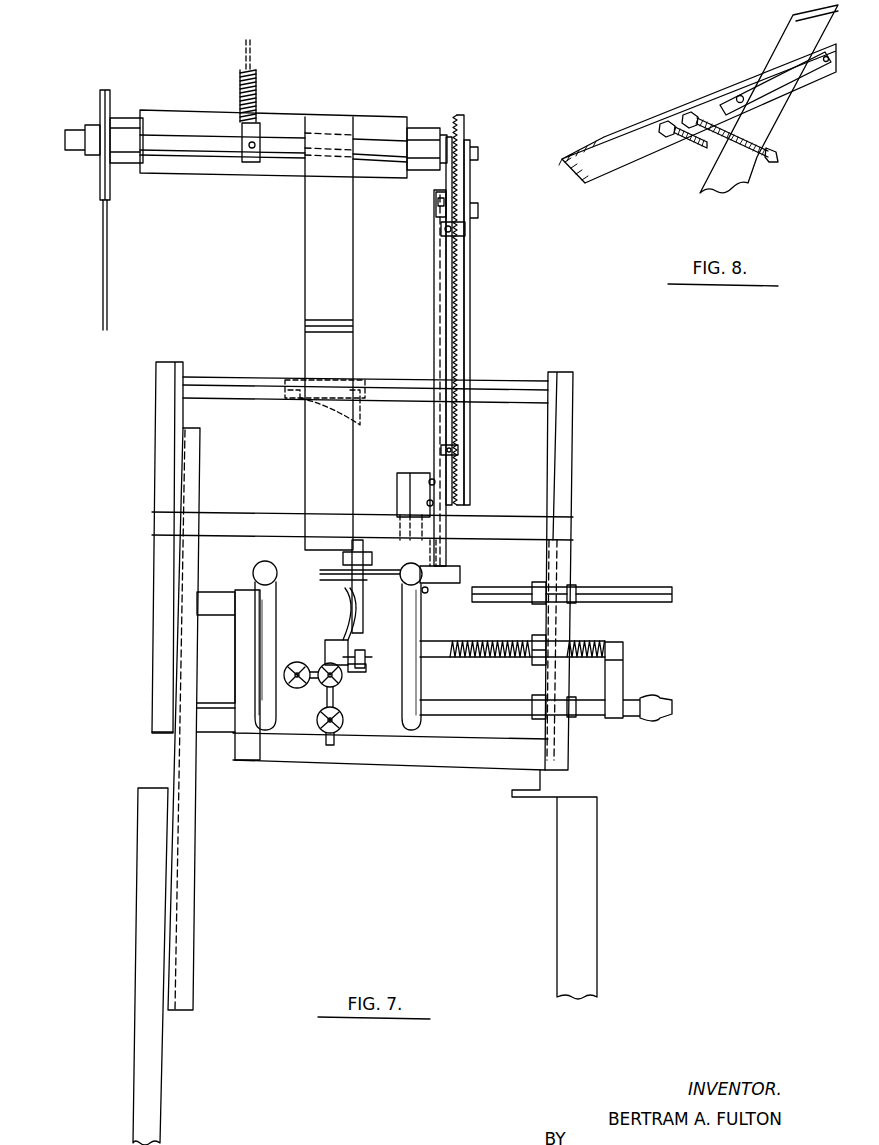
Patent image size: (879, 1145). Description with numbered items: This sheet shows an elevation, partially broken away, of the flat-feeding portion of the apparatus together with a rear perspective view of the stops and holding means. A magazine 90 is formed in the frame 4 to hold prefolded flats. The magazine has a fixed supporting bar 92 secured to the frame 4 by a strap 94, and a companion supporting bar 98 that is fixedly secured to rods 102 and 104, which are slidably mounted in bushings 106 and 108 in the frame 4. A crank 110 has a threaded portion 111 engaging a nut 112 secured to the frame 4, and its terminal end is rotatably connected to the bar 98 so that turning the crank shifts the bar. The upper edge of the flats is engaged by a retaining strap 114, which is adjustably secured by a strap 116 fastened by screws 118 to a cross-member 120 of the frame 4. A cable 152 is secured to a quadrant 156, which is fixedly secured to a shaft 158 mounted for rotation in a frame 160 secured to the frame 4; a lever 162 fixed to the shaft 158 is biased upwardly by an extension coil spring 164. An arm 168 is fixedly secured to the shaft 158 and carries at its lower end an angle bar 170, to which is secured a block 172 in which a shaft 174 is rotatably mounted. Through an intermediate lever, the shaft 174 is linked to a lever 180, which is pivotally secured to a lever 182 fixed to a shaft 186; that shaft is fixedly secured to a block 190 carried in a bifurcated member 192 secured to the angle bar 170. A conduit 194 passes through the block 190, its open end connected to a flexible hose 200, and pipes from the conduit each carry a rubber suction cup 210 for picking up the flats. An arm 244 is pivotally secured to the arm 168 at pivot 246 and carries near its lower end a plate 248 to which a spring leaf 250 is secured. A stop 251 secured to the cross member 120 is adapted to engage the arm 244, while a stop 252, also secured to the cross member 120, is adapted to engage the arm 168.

In FIG. 7, the frame 4 is at (563, 480).
In FIG. 7, the magazine 90 is at (84, 617).
In FIG. 7, the fixed supporting bar 92 is at (257, 572).
In FIG. 7, the strap 94 is at (228, 614).
In FIG. 7, the companion supporting bar 98 is at (405, 687).
In FIG. 7, the rod 102 is at (597, 712).
In FIG. 7, the rod 104 is at (628, 593).
In FIG. 7, the bushing 106 is at (572, 703).
In FIG. 7, the bushing 108 is at (572, 587).
In FIG. 7, the crank 110 is at (620, 678).
In FIG. 7, the threaded portion 111 is at (478, 660).
In FIG. 7, the nut 112 is at (533, 638).
In FIG. 7, the retaining strap 114 is at (313, 428).
In FIG. 7, the strap 116 is at (325, 382).
In FIG. 8, the strap 116 is at (793, 80).
In FIG. 7, the screws 118 is at (348, 413).
In FIG. 8, the screws 118 is at (737, 97).
In FIG. 7, the cross-member 120 is at (233, 377).
In FIG. 8, the cross-member 120 is at (628, 133).
In FIG. 7, the cable 152 is at (109, 240).
In FIG. 7, the quadrant 156 is at (112, 110).
In FIG. 7, the shaft 158 is at (375, 142).
In FIG. 7, the frame 160 is at (175, 120).
In FIG. 7, the lever 162 is at (247, 150).
In FIG. 7, the extension coil spring 164 is at (255, 113).
In FIG. 7, the arm 168 is at (465, 182).
In FIG. 7, the angle bar 170 is at (457, 592).
In FIG. 7, the block 172 is at (380, 578).
In FIG. 7, the shaft 174 is at (357, 560).
In FIG. 7, the lever 180 is at (340, 569).
In FIG. 7, the lever 182 is at (357, 668).
In FIG. 7, the shaft 186 is at (363, 657).
In FIG. 7, the block 190 is at (330, 653).
In FIG. 7, the bifurcated member 192 is at (323, 612).
In FIG. 7, the conduit 194 is at (330, 700).
In FIG. 7, the flexible hose 200 is at (468, 258).
In FIG. 7, the rubber suction cup 210 is at (342, 717).
In FIG. 7, the arm 244 is at (437, 253).
In FIG. 7, the pivot 246 is at (433, 212).
In FIG. 7, the plate 248 is at (418, 478).
In FIG. 7, the spring leaf 250 is at (397, 525).
In FIG. 8, the stop 251 is at (780, 150).
In FIG. 8, the stop 252 is at (690, 155).